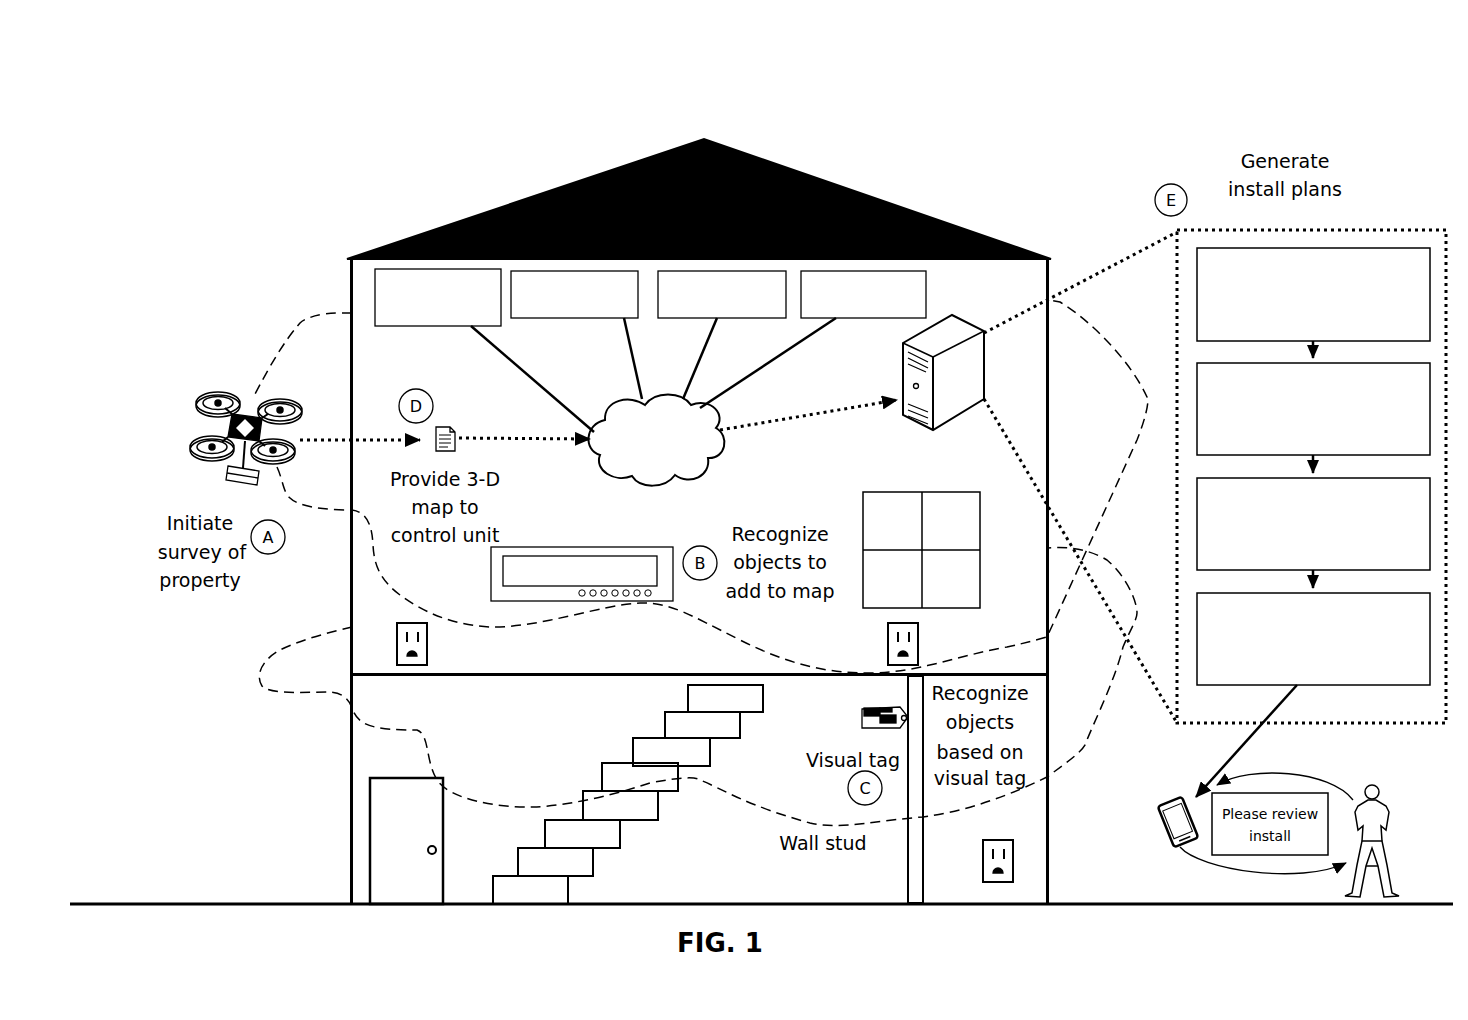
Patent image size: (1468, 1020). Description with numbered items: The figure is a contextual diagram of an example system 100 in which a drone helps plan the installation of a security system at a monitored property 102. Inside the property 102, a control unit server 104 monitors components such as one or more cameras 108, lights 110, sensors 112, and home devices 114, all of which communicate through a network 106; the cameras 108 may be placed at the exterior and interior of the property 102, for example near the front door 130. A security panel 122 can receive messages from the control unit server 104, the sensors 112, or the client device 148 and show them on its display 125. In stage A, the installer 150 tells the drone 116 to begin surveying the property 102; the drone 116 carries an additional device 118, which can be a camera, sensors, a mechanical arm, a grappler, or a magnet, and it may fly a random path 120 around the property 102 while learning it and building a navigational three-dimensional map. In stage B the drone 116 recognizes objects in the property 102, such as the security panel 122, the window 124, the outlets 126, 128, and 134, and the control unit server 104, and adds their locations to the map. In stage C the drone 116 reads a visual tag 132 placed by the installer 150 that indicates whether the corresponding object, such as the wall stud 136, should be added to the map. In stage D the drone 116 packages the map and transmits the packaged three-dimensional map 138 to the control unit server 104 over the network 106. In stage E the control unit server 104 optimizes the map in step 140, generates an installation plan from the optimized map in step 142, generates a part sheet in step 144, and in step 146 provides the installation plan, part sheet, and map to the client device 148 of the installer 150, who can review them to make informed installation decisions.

The system 100 is at (1368, 93).
The monitored property 102 is at (982, 231).
The control unit server 104 is at (974, 318).
The network 106 is at (657, 440).
The cameras 108 is at (575, 294).
The lights 110 is at (722, 294).
The sensors 112 is at (863, 294).
The home devices 114 is at (438, 297).
The drone 116 is at (217, 393).
The additional device 118 is at (218, 473).
The random path 120 is at (312, 318).
The security panel 122 is at (558, 547).
The window 124 is at (920, 491).
The display 125 is at (620, 556).
The outlet 126 is at (430, 655).
The outlet 128 is at (921, 653).
The front door 130 is at (444, 862).
The visual tag 132 is at (862, 712).
The outlet 134 is at (984, 853).
The wall stud 136 is at (908, 888).
The packaged 3-D map 138 is at (460, 432).
The optimizing the 3-D map 140 is at (1313, 294).
The generating an installation plan 142 is at (1313, 409).
The generating a part sheet 144 is at (1313, 524).
The providing the installation plan, part sheet, and 3-D map 146 is at (1313, 639).
The client device 148 is at (1162, 808).
The installer 150 is at (1397, 813).